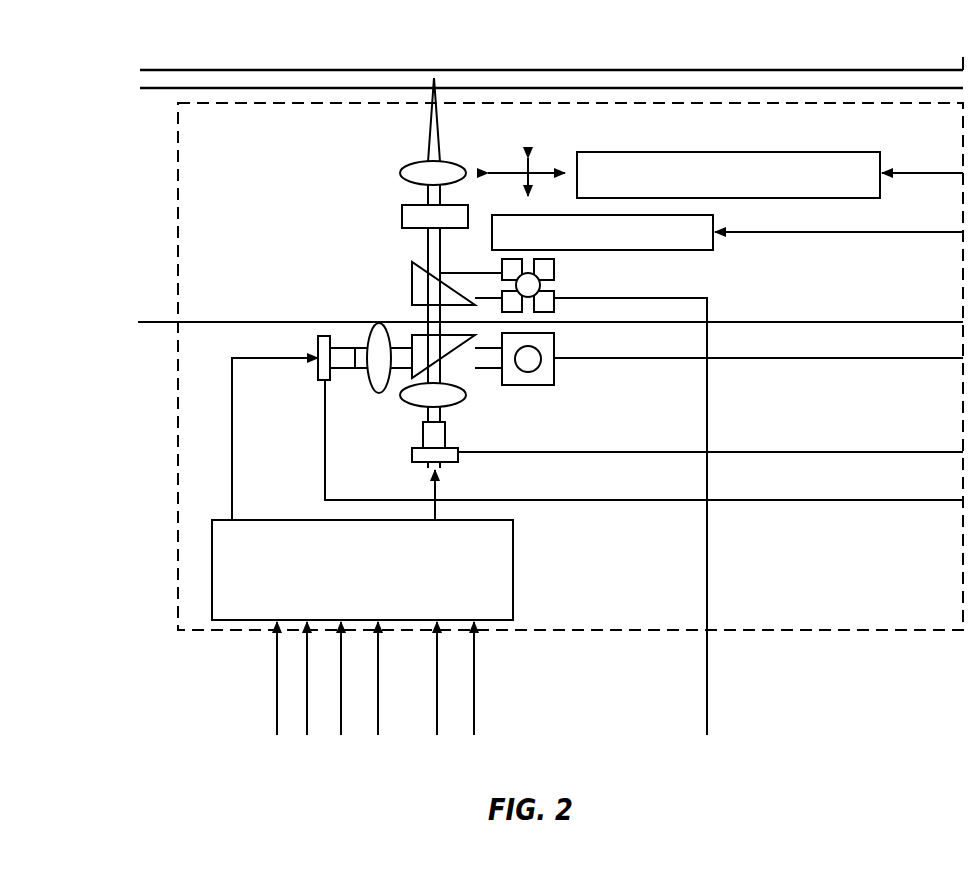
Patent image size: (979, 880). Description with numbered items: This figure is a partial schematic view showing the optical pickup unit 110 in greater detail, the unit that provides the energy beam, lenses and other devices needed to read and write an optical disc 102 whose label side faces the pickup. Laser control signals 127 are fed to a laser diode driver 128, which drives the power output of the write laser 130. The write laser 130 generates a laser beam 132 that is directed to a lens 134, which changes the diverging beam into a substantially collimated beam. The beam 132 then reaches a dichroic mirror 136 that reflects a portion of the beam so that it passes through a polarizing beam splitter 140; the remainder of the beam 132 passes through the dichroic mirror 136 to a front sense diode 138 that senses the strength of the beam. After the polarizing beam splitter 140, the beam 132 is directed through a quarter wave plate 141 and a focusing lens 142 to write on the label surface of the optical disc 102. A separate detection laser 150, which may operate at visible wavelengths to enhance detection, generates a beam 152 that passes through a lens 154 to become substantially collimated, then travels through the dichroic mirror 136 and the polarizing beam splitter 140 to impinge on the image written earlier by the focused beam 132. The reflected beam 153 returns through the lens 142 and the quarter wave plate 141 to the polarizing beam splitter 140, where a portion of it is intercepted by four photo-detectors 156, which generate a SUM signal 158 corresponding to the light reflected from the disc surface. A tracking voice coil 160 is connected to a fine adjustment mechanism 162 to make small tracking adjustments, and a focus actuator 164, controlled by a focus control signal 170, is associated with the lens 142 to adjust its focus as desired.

The optical disc 102 is at (595, 70).
The optical pickup unit 110 is at (263, 96).
The laser control signals 127 is at (488, 685).
The laser diode driver 128 is at (513, 585).
The write laser 130 is at (318, 345).
The laser beam 132 is at (347, 370).
The lens 134 is at (382, 395).
The dichroic mirror 136 is at (412, 350).
The front sense diode 138 is at (556, 375).
The polarizing beam splitter 140 is at (412, 280).
The quarter wave plate 141 is at (402, 210).
The focusing lens 142 is at (400, 170).
The detection laser 150 is at (458, 462).
The beam 152 is at (447, 433).
The reflected beam 153 is at (445, 272).
The lens 154 is at (467, 395).
The photo-detectors 156 is at (562, 268).
The SUM signal 158 is at (707, 437).
The tracking voice coil 160 is at (770, 152).
The fine adjustment mechanism 162 is at (545, 148).
The focus actuator 164 is at (713, 216).
The focus control signal 170 is at (845, 233).